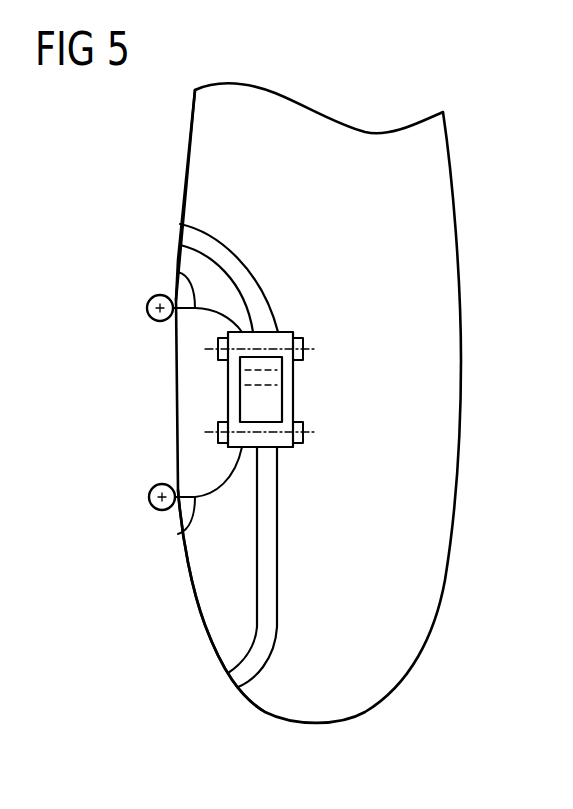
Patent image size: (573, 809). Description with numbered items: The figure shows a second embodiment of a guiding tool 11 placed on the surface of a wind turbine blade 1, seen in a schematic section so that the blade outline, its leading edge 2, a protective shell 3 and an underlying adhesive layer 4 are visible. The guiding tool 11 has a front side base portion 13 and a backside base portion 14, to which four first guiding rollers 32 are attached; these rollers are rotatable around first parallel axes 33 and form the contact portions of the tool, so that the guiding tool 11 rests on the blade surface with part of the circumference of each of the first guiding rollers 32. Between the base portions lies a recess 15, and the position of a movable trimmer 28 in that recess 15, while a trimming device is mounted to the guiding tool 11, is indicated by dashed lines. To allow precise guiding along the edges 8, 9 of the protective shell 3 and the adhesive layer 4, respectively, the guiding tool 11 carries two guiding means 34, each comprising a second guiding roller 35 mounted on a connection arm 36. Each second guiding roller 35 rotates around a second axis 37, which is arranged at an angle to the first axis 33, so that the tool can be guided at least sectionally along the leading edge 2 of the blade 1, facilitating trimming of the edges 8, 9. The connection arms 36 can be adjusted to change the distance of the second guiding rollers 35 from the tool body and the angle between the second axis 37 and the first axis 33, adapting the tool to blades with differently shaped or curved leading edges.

The wind turbine blade 1 is at (417, 223).
The leading edge 2 is at (186, 173).
The protective shell 3 is at (203, 562).
The adhesive layer 4 is at (263, 624).
The edge of the protective shell 8 is at (255, 592).
The edge of the adhesive layer 9 is at (267, 652).
The guiding tool 11 is at (293, 393).
The front side base portion 13 is at (292, 332).
The backside base portion 14 is at (283, 447).
The recess 15 is at (260, 410).
The trimmer 28 is at (267, 377).
The first guiding rollers 32 is at (218, 432).
The first parallel axes 33 is at (257, 348).
The guiding means 34 is at (177, 272).
The second guiding roller 35 is at (147, 308).
The connection arm 36 is at (207, 402).
The second axis 37 is at (160, 321).